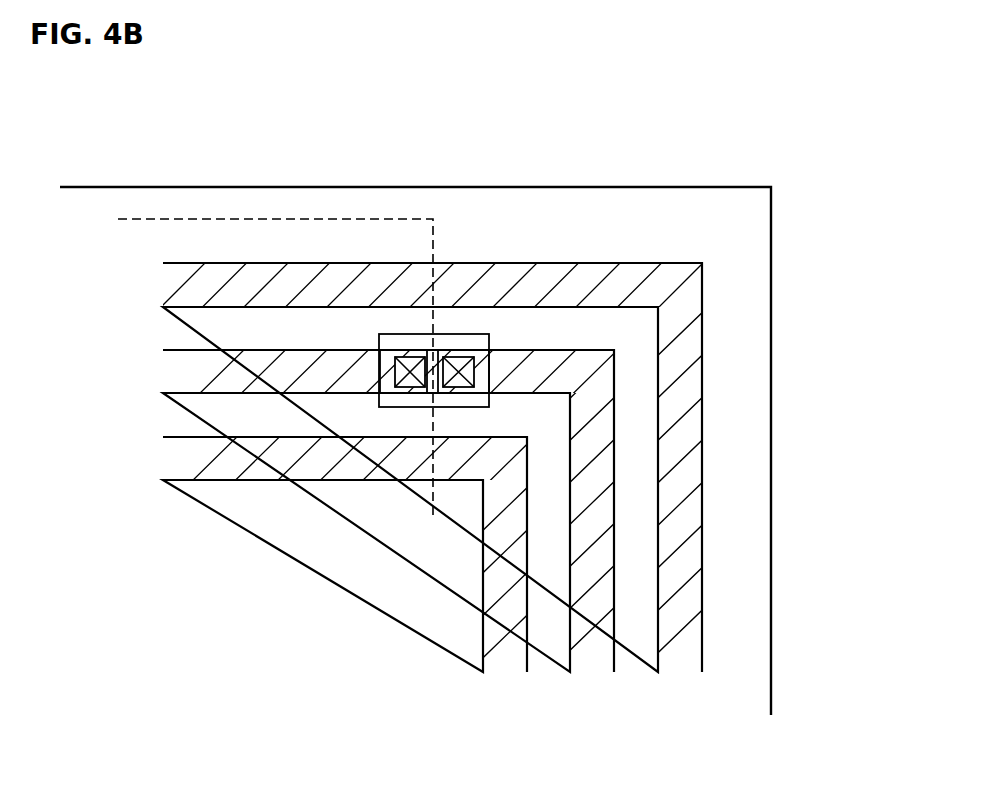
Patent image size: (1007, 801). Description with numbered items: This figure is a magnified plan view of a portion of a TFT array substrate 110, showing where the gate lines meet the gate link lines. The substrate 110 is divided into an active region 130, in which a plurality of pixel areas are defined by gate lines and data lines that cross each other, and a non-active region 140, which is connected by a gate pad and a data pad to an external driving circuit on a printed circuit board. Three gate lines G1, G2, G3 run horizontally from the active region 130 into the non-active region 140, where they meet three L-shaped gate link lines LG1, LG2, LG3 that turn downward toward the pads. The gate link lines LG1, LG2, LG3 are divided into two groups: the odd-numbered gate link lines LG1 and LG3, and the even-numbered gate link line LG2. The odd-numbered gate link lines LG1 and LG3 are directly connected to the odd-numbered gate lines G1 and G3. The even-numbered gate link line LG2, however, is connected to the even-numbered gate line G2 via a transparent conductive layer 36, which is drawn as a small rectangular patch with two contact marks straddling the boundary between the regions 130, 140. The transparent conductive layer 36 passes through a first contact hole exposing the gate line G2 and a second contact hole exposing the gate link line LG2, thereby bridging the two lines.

The TFT array substrate 110 is at (410, 118).
The active region 130 is at (403, 230).
The non-active region 140 is at (497, 200).
The transparent conductive layer 36 is at (470, 334).
The gate line G1 is at (432, 272).
The gate line G2 is at (409, 359).
The gate line G3 is at (364, 447).
The gate link line LG1 is at (683, 387).
The gate link line LG2 is at (598, 490).
The gate link line LG3 is at (513, 603).